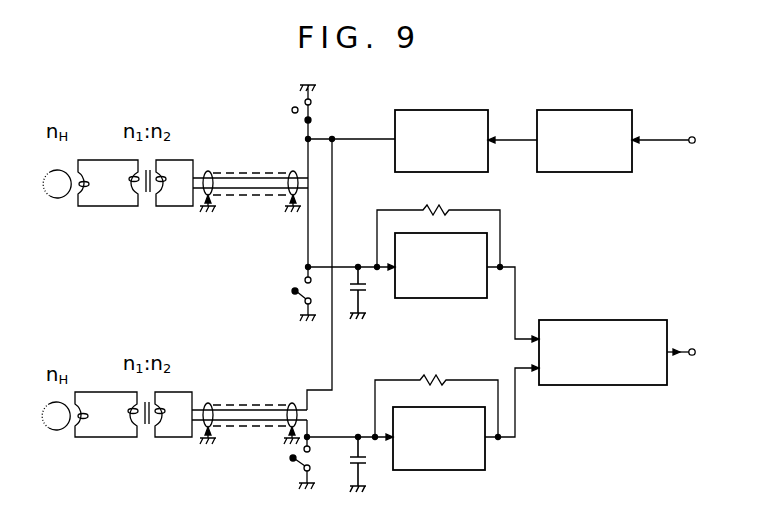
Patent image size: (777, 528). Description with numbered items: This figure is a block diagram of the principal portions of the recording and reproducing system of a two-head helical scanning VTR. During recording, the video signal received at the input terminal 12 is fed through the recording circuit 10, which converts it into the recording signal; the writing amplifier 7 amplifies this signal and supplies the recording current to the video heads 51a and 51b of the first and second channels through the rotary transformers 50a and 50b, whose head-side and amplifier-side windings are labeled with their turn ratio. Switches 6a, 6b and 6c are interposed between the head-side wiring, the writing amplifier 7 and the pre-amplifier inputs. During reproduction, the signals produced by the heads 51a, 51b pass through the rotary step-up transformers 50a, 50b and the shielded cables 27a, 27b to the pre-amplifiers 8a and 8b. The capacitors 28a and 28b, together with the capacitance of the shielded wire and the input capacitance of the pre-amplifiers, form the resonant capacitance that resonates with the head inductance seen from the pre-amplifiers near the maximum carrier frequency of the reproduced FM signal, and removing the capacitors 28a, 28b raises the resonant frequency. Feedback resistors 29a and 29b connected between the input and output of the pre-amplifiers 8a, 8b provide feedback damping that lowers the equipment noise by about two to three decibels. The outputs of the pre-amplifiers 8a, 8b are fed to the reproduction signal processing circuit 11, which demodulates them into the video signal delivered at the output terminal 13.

The switch 6a is at (311, 118).
The switch 6b is at (296, 290).
The switch 6c is at (292, 460).
The writing amplifier 7 is at (463, 110).
The head amplifier 8a is at (471, 298).
The head amplifier 8b is at (470, 470).
The recording circuit 10 is at (610, 110).
The reproduction signal processing circuit 11 is at (610, 385).
The input terminal 12 is at (693, 136).
The output terminal 13 is at (694, 348).
The shielded cable 27a is at (245, 172).
The shielded cable 27b is at (247, 402).
The capacitor 28a is at (365, 293).
The capacitor 28b is at (365, 466).
The feedback resistor 29a is at (452, 205).
The feedback resistor 29b is at (448, 376).
The rotary transformer 50a is at (147, 207).
The rotary transformer 50b is at (147, 439).
The video head 51a is at (60, 198).
The video head 51b is at (60, 430).